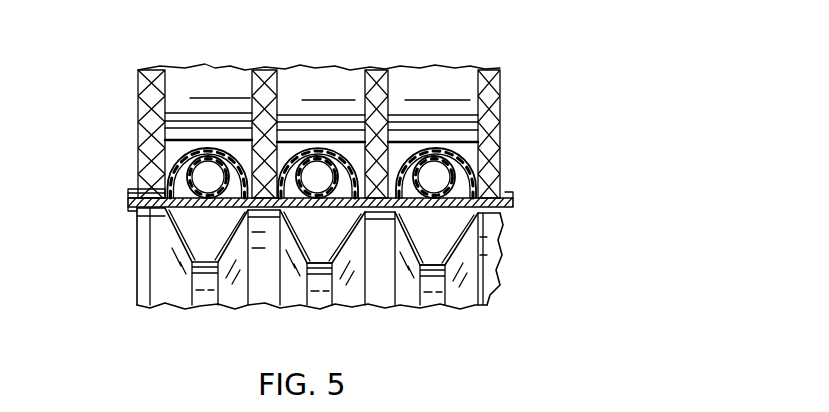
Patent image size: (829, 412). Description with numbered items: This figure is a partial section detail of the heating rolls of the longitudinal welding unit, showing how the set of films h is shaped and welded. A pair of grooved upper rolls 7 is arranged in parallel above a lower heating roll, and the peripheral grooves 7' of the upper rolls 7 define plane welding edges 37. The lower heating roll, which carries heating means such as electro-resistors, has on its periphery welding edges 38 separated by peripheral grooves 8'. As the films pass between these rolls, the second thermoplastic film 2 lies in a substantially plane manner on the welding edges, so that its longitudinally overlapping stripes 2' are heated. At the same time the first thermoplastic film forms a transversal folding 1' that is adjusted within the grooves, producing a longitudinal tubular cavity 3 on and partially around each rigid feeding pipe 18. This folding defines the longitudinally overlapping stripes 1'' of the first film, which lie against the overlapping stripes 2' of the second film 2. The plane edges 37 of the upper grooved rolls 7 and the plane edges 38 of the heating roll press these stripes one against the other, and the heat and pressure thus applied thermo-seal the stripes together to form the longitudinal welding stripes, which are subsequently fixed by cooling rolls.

The rigid feeding pipes 18 is at (208, 170).
The transversal folding 1' is at (374, 102).
The welding edges of roll 7 37 is at (263, 112).
The peripheral grooves of roll 7 7' is at (269, 102).
The grooved upper rolls 7 is at (272, 102).
The longitudinally overlapping stripes of film 1 1'' is at (101, 193).
The longitudinally overlapping stripes of film 2 2' is at (89, 226).
The second thermoplastic film 2 is at (355, 229).
The longitudinal tubular cavity 3 is at (137, 228).
The set of films h is at (202, 213).
The welding edges of roll 8 38 is at (263, 210).
The peripheral grooves of roll 8 8' is at (374, 237).